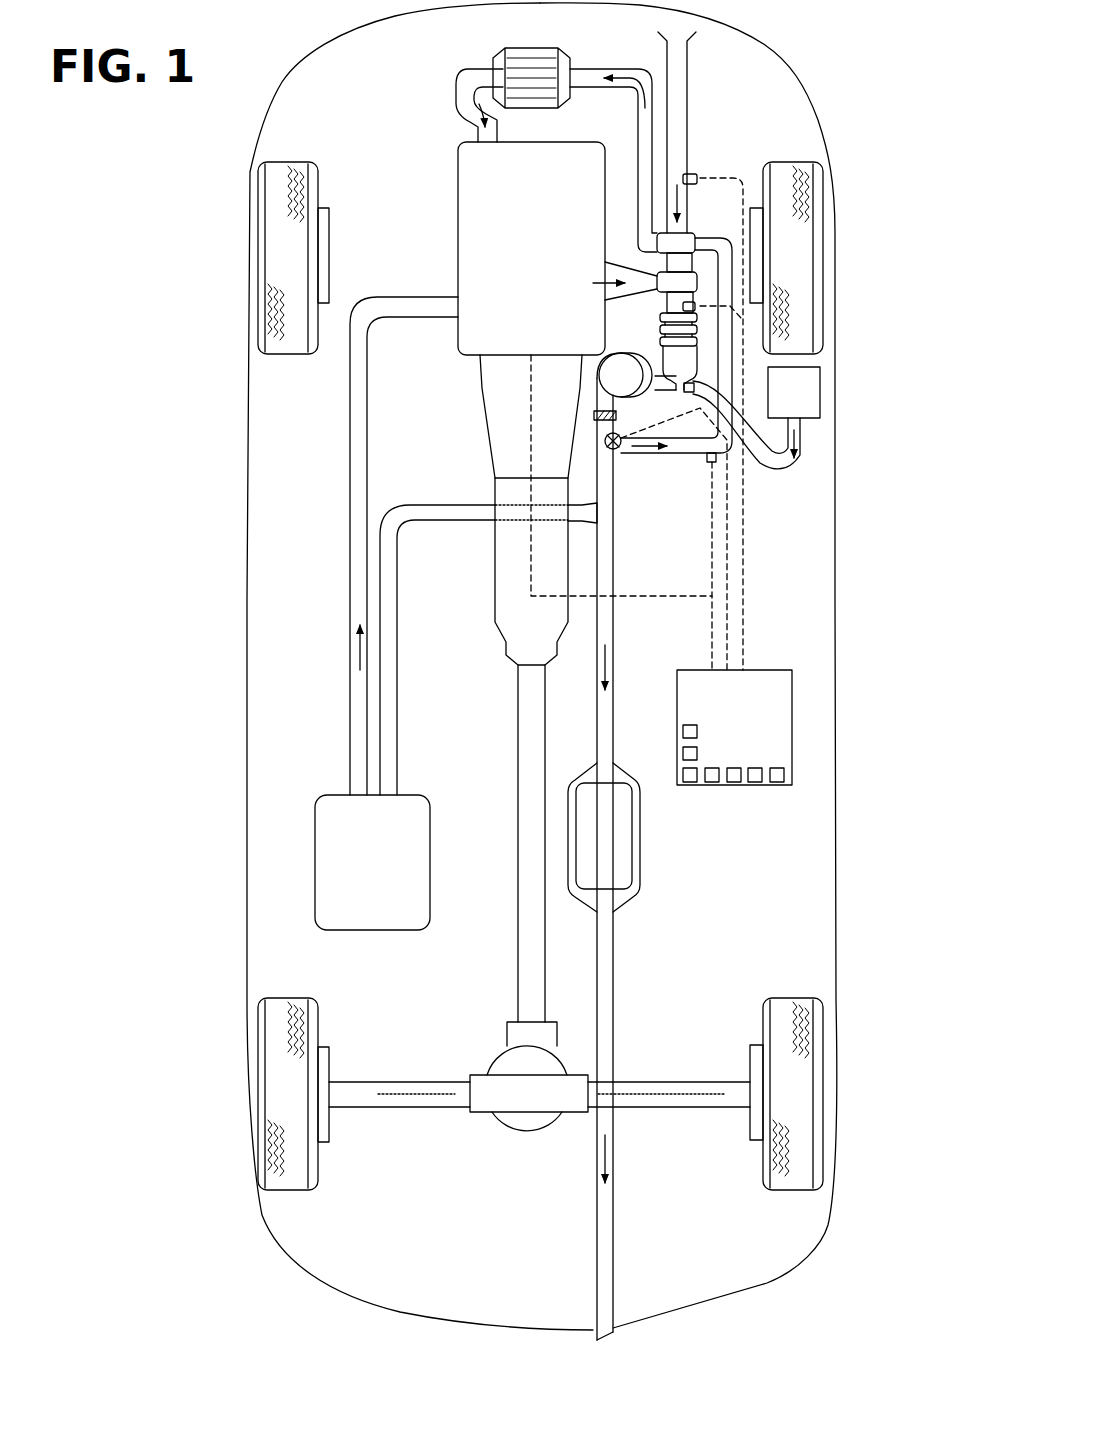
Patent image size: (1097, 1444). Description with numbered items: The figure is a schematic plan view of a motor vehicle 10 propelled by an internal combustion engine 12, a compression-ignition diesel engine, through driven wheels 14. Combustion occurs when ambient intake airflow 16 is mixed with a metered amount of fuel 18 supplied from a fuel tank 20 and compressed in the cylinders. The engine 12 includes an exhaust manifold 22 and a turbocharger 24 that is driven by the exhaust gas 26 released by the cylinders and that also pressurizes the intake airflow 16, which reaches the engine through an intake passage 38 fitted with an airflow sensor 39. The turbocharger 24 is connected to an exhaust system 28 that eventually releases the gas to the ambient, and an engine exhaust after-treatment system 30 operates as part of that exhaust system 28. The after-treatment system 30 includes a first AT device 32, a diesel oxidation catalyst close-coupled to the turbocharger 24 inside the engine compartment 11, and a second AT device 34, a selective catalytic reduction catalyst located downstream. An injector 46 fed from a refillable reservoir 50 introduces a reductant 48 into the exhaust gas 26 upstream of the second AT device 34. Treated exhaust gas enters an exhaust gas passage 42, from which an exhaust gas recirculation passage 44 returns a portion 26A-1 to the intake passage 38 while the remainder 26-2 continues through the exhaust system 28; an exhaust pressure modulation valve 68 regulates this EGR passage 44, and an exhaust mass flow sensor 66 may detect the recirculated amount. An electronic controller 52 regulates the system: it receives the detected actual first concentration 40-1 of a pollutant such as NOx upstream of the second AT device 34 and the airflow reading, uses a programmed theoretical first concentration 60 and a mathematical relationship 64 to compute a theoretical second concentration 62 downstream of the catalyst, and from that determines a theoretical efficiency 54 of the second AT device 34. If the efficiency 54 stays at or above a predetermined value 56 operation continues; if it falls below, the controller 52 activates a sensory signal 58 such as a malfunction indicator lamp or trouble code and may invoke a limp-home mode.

The motor vehicle 10 is at (232, 698).
The engine compartment 11 is at (372, 97).
The internal combustion engine 12 is at (519, 269).
The driven wheels 14 is at (317, 1037).
The intake airflow 16 is at (470, 107).
The fuel 18 is at (360, 648).
The fuel tank 20 is at (367, 871).
The exhaust manifold 22 is at (620, 300).
The turbocharger 24 is at (698, 231).
The exhaust gas 26 is at (603, 277).
The remainder of treated exhaust gas 26-2 is at (613, 664).
The recirculated portion of treated exhaust gas 26A-1 is at (647, 456).
The exhaust system 28 is at (620, 922).
The engine exhaust after-treatment system 30 is at (595, 372).
The first AT device 32 is at (669, 372).
The second AT device 34 is at (614, 386).
The intake passage 38 is at (666, 68).
The airflow sensor 39 is at (693, 172).
The actual first concentration 40-1 is at (777, 784).
The exhaust gas passage 42 is at (597, 694).
The exhaust gas recirculation passage 44 is at (670, 456).
The injector 46 is at (681, 394).
The reductant 48 is at (798, 466).
The refillable reservoir 50 is at (783, 405).
The electronic controller 52 is at (722, 740).
The theoretical efficiency 54 is at (756, 784).
The predetermined value 56 is at (736, 784).
The sensory signal 58 is at (711, 784).
The theoretical first concentration 60 is at (680, 774).
The theoretical second concentration 62 is at (680, 752).
The mathematical relationship 64 is at (680, 731).
The exhaust mass flow sensor 66 is at (686, 458).
The exhaust pressure modulation valve 68 is at (617, 450).